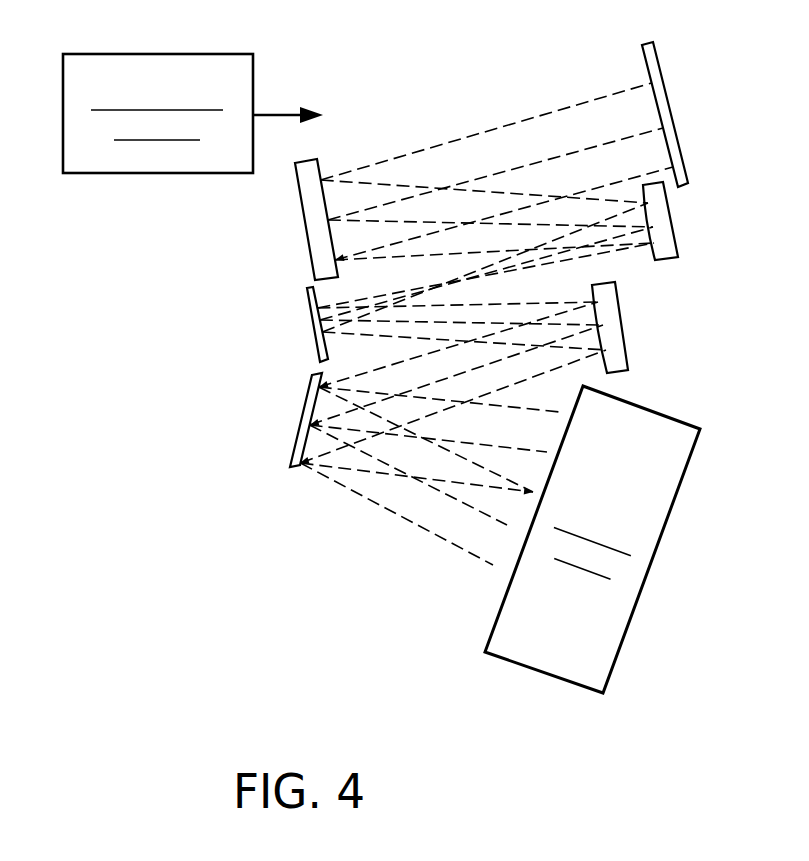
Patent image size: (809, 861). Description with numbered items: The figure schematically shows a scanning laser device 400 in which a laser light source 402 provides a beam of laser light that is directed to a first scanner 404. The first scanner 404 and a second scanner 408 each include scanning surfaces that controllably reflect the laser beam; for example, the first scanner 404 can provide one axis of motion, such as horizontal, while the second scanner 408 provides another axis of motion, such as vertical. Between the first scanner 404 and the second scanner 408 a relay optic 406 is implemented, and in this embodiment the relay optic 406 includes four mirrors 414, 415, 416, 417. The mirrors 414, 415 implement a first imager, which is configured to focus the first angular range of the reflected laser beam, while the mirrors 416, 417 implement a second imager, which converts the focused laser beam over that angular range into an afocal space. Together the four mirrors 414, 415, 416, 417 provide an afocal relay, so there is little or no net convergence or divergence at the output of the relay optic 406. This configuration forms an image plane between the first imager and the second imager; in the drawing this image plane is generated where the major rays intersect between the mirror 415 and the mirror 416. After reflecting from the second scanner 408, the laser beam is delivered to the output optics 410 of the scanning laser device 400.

The scanning laser device 400 is at (357, 652).
The laser light source 402 is at (118, 173).
The first scanner 404 is at (680, 127).
The relay optic 406 is at (482, 90).
The second scanner 408 is at (299, 428).
The output optics 410 is at (527, 667).
The mirror 414 is at (306, 232).
The mirror 415 is at (677, 238).
The mirror 416 is at (310, 308).
The mirror 417 is at (628, 350).